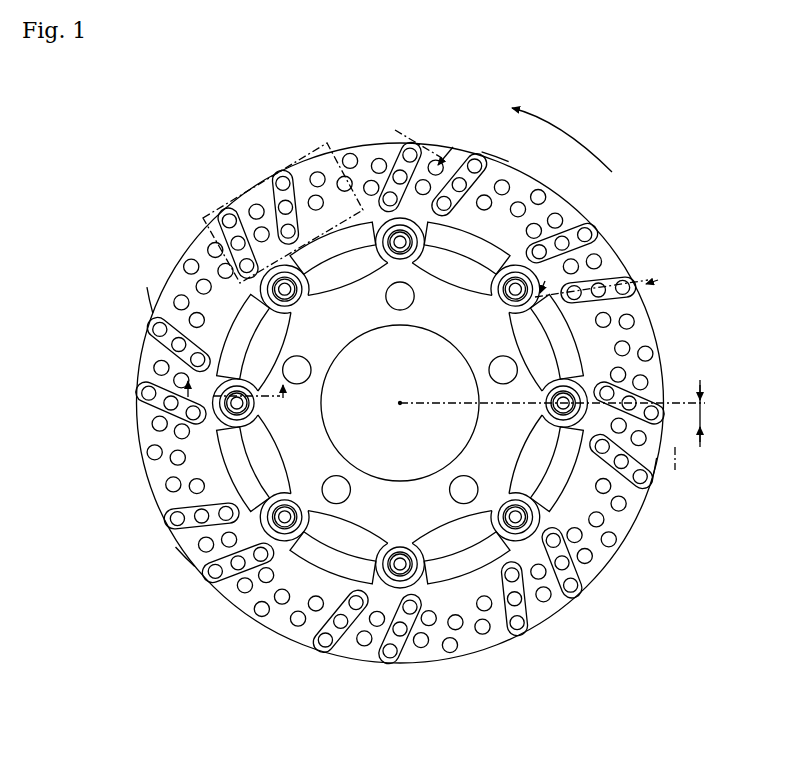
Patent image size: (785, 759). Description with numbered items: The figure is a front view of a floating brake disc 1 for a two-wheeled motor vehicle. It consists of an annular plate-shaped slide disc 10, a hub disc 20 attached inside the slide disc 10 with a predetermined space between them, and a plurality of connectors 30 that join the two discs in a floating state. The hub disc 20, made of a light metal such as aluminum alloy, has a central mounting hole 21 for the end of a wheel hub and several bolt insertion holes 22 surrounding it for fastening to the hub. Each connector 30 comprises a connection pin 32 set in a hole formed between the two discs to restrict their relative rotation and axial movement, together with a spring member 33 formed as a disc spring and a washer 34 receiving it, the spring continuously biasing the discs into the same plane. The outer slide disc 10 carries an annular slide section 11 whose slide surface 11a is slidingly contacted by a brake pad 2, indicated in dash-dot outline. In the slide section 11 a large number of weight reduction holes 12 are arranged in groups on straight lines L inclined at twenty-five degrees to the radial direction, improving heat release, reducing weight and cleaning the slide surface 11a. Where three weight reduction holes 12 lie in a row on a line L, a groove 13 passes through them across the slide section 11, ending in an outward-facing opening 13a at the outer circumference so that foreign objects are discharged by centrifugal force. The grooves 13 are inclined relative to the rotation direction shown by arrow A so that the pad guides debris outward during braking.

The floating brake disc 1 is at (650, 182).
The brake pad 2 is at (328, 143).
The slide disc 10 is at (289, 645).
The slide section 11 is at (249, 608).
The slide surface 11a is at (503, 170).
The weight reduction holes 12 is at (624, 343).
The grooves 13 is at (276, 180).
The openings 13a is at (298, 168).
The hub disc 20 is at (585, 503).
The mounting hole 21 is at (384, 408).
The bolt insertion holes 22 is at (400, 300).
The connectors 30 is at (420, 264).
The connection pins 32 is at (393, 250).
The spring members 33 is at (418, 261).
The washers 34 is at (384, 253).
The arrow A is at (582, 143).
The straight lines L is at (681, 472).